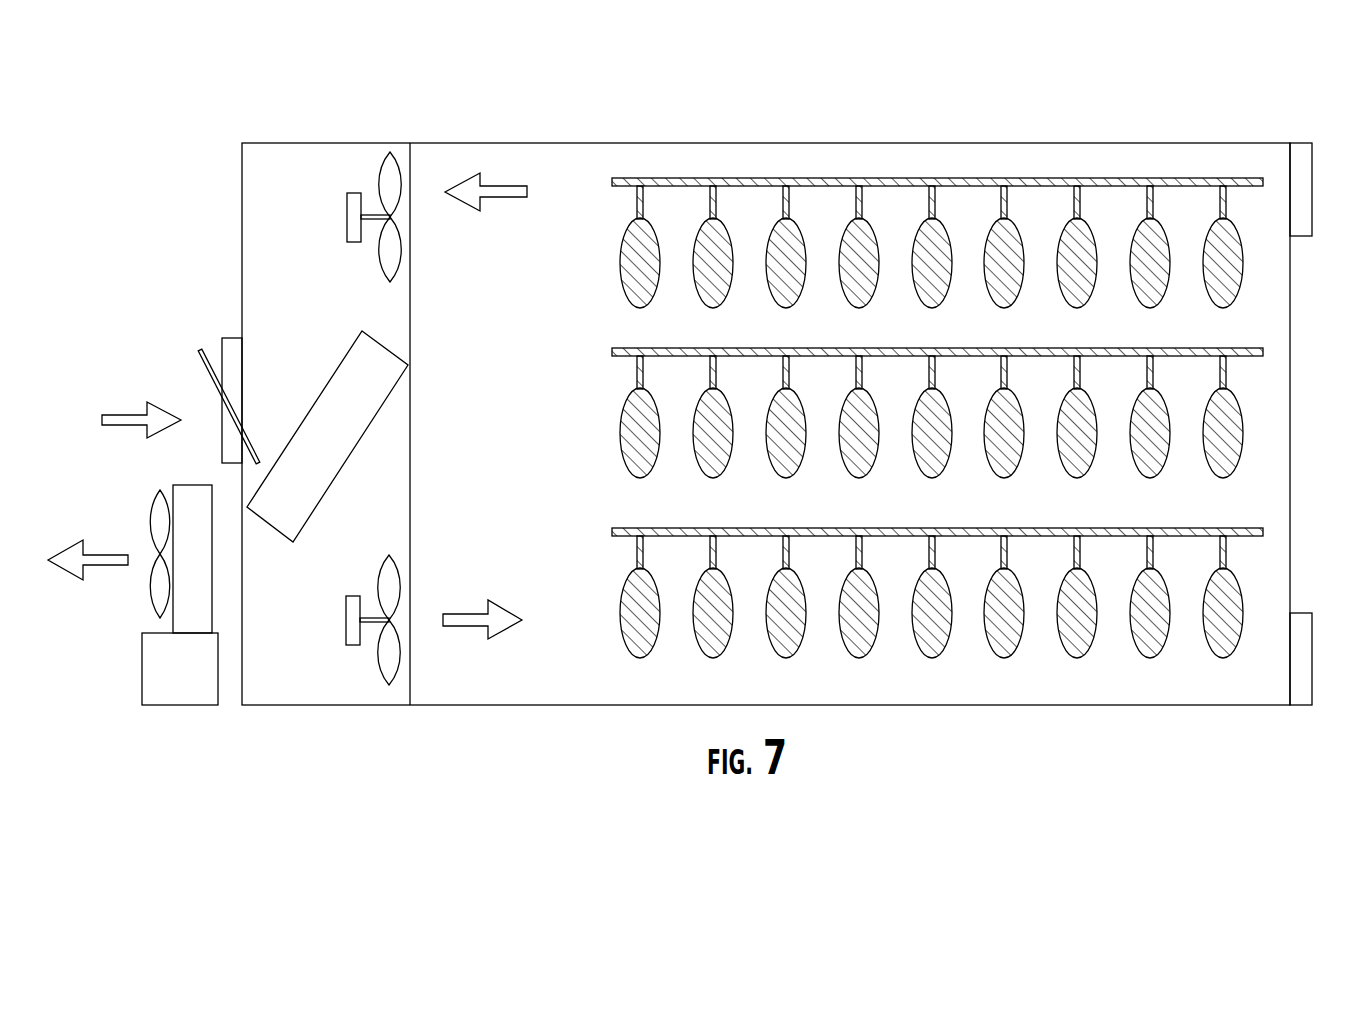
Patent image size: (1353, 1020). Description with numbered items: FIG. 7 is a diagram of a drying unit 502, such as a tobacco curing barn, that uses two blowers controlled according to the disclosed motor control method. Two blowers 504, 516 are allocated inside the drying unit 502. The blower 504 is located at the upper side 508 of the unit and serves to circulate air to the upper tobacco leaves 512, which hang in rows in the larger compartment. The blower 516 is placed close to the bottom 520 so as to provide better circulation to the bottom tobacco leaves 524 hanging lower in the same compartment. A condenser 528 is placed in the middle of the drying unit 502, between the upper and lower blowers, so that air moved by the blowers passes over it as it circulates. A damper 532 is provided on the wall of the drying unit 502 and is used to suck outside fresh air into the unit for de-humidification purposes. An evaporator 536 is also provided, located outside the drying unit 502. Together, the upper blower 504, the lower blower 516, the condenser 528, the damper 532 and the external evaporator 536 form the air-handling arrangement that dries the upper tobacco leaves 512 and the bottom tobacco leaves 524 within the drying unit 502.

The drying unit 502 is at (597, 143).
The blower 504 is at (347, 217).
The upper side 508 is at (319, 295).
The upper tobacco leaves 512 is at (621, 283).
The blower 516 is at (347, 605).
The bottom 520 is at (319, 658).
The bottom tobacco leaves 524 is at (621, 618).
The condenser 528 is at (347, 432).
The damper 532 is at (230, 338).
The evaporator 536 is at (188, 485).